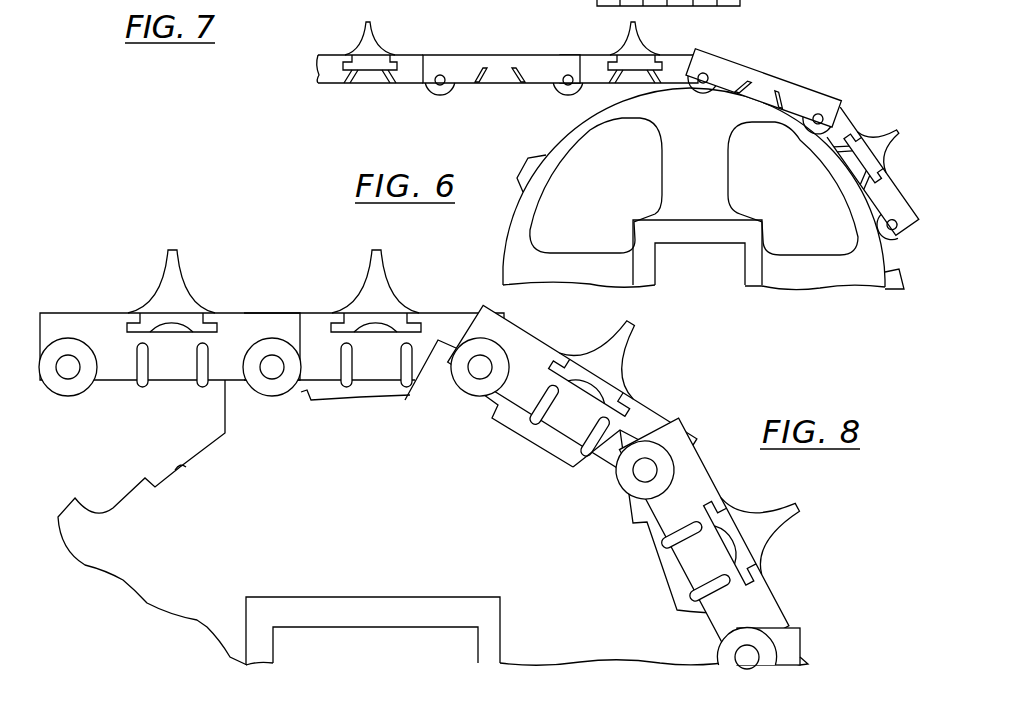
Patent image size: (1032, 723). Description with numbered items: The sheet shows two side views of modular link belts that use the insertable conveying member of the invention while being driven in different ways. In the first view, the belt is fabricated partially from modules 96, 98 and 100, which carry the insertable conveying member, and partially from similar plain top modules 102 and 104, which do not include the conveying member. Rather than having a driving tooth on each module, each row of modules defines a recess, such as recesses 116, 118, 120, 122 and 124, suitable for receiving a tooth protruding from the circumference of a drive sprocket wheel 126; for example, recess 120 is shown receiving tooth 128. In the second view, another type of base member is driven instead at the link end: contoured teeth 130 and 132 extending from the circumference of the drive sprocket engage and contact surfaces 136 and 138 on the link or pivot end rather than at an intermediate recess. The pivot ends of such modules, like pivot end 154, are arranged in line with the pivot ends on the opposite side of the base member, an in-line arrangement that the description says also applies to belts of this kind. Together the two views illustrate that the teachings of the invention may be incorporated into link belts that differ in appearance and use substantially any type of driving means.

In FIG. 6, the module 96 is at (375, 72).
In FIG. 6, the module 98 is at (629, 72).
In FIG. 6, the module 100 is at (845, 113).
In FIG. 6, the plain top module 102 is at (503, 72).
In FIG. 6, the plain top module 104 is at (753, 116).
In FIG. 6, the recess 116 is at (370, 97).
In FIG. 6, the recess 118 is at (497, 96).
In FIG. 6, the recess 120 is at (615, 96).
In FIG. 6, the recess 122 is at (728, 115).
In FIG. 6, the recess 124 is at (847, 174).
In FIG. 6, the drive sprocket wheel 126 is at (788, 285).
In FIG. 6, the tooth 128 is at (637, 118).
In FIG. 8, the contoured tooth 130 is at (253, 405).
In FIG. 8, the contoured tooth 132 is at (445, 388).
In FIG. 8, the surface 136 is at (272, 338).
In FIG. 8, the surface 138 is at (460, 338).
In FIG. 8, the pivot end 154 is at (180, 467).